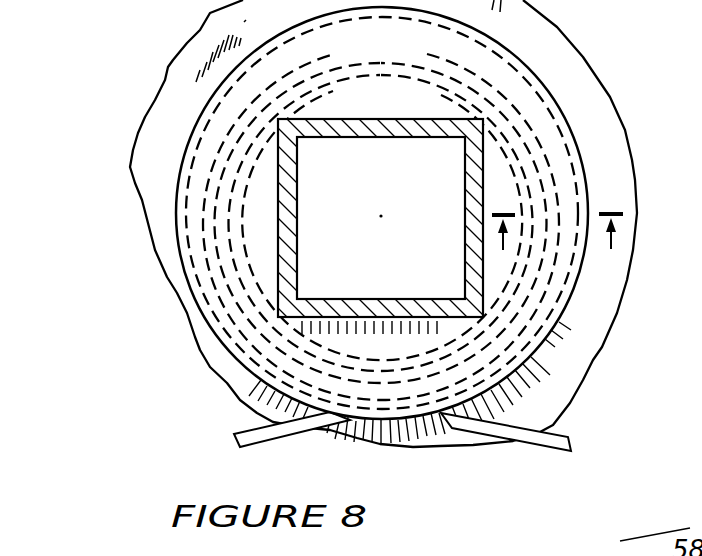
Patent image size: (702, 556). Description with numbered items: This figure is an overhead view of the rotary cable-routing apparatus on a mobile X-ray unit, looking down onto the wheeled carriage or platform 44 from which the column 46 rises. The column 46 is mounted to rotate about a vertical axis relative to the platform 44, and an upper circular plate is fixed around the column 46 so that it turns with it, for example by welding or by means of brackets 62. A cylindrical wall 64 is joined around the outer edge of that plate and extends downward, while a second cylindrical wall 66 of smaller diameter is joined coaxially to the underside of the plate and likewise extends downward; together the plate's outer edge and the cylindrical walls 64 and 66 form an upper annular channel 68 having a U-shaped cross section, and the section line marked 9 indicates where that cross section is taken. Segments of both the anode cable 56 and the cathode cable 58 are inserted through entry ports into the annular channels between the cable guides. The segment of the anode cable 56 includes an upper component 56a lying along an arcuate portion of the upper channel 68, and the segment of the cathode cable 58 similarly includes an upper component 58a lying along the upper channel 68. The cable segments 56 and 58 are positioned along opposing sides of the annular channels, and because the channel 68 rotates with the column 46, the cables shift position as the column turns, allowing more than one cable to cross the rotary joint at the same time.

The carriage or platform 44 is at (560, 40).
The column 46 is at (481, 151).
The anode cable 56 is at (594, 358).
The cathode cable 58 is at (272, 428).
The upper component of anode cable segment 56a is at (228, 128).
The upper component of cathode cable segment 58a is at (562, 304).
The brackets 62 is at (252, 205).
The cylindrical wall 64 is at (182, 267).
The second cylindrical wall 66 is at (275, 322).
The upper annular channel 68 is at (567, 171).
The section line 9 is at (557, 251).